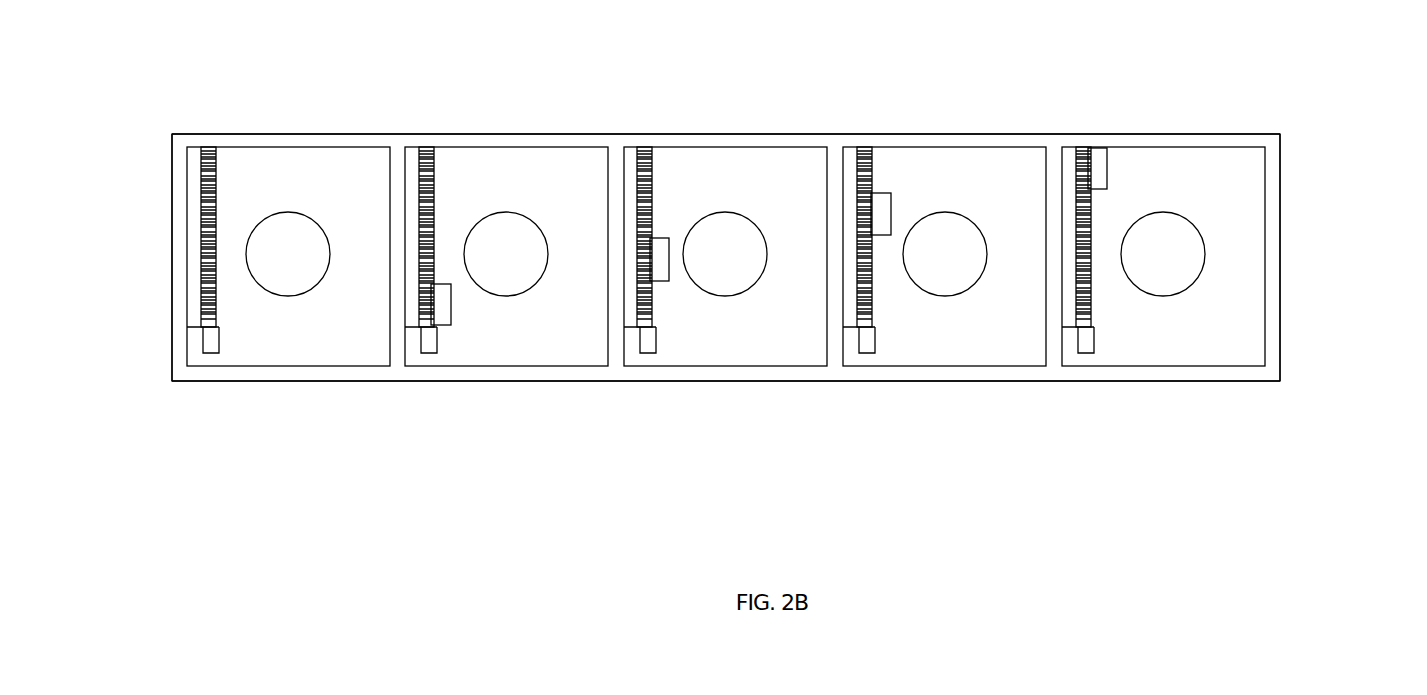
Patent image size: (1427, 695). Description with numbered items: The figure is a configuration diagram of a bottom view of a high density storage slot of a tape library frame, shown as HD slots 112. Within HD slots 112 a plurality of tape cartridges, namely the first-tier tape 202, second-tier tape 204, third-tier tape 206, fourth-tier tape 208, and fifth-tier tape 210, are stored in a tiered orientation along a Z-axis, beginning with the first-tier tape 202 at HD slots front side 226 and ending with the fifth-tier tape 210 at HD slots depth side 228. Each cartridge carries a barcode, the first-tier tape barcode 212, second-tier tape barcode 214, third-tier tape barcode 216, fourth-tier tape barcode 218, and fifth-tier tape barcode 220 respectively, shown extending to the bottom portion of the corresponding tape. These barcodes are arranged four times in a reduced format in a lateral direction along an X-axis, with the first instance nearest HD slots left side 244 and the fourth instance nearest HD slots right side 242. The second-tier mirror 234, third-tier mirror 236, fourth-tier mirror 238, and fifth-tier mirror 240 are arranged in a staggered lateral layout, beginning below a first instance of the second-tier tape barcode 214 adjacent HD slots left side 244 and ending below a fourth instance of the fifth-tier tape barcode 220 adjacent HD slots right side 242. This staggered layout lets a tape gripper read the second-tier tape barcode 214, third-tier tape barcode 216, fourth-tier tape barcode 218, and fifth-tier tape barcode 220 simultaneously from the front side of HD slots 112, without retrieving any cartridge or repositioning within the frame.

The HD slots 112 is at (1250, 134).
The HD slots right side 242 is at (222, 134).
The HD slots front side 226 is at (172, 250).
The HD slots left side 244 is at (185, 381).
The HD slots depth side 228 is at (1280, 277).
The tier 1 tape 202 is at (312, 153).
The tier 2 tape 204 is at (518, 153).
The tier 3 tape 206 is at (733, 153).
The tier 4 tape 208 is at (959, 153).
The tier 5 tape 210 is at (1180, 153).
The tier 1 tape barcode 212 is at (213, 265).
The tier 2 tape barcode 214 is at (432, 260).
The tier 3 tape barcode 216 is at (650, 211).
The tier 4 tape barcode 218 is at (872, 169).
The tier 5 tape barcode 220 is at (1089, 264).
The tier 2 mirror 234 is at (445, 309).
The tier 3 mirror 236 is at (663, 263).
The tier 4 mirror 238 is at (887, 213).
The tier 5 mirror 240 is at (1098, 182).